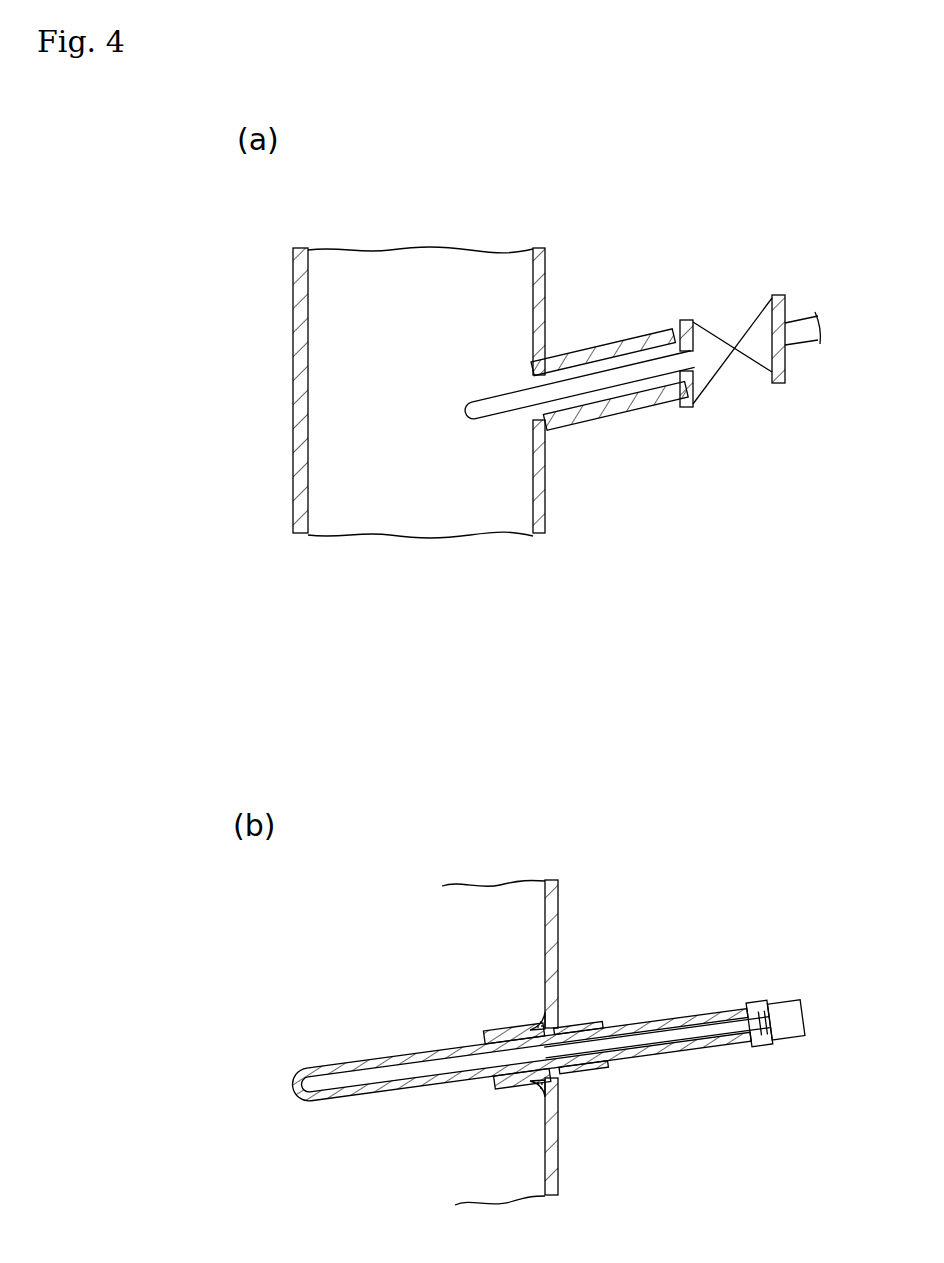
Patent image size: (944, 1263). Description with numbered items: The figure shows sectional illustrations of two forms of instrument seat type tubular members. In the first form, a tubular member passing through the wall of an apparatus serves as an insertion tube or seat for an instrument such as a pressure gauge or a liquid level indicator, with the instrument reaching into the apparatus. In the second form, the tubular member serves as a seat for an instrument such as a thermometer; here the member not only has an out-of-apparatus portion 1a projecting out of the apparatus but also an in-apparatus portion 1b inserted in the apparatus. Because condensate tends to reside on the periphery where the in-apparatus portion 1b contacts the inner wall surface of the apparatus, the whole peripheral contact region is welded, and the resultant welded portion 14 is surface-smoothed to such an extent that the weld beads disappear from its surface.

The out-of-apparatus portion of tubular member 1a is at (598, 1022).
The in-apparatus portion of tubular member 1b is at (500, 1032).
The welded portion 14 is at (540, 1022).